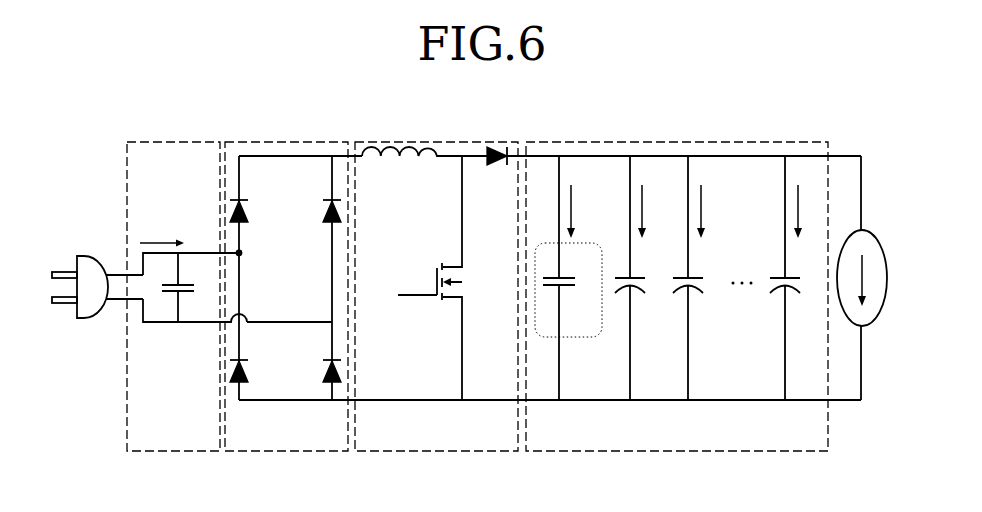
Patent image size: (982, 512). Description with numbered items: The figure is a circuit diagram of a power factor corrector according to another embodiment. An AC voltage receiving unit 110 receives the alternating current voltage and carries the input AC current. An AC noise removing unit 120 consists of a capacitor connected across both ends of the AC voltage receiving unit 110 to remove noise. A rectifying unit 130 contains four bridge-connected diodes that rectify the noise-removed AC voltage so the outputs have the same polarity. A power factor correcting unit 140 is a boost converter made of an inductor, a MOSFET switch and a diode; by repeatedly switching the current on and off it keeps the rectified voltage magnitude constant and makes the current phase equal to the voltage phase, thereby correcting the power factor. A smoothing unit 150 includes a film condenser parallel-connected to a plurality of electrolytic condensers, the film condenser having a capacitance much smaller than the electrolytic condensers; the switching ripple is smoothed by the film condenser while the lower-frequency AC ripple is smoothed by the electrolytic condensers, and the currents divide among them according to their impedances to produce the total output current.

The AC voltage receiving unit 110 is at (98, 257).
The AC noise removing unit 120 is at (175, 142).
The rectifying unit 130 is at (288, 142).
The power factor correcting unit 140 is at (455, 142).
The smoothing unit 150 is at (677, 142).